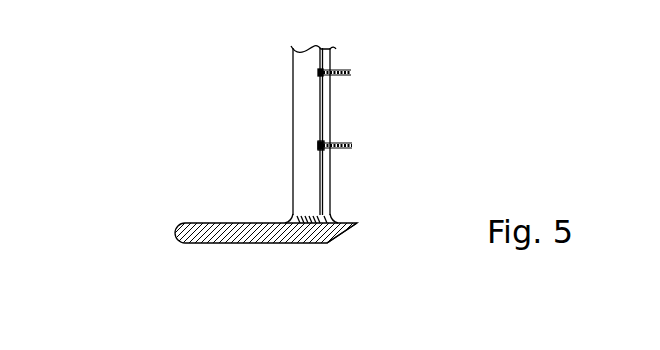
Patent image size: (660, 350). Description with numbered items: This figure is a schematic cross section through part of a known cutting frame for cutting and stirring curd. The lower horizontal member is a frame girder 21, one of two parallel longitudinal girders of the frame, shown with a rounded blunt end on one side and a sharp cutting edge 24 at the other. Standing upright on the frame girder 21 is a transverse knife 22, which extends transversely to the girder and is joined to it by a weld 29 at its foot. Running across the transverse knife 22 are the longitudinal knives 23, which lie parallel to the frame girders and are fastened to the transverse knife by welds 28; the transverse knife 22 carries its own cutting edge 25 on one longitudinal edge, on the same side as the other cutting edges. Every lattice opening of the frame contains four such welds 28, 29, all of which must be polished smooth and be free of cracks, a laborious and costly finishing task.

The frame girder 21 is at (236, 233).
The transverse knife 22 is at (308, 88).
The longitudinal knife 23 is at (343, 70).
The cutting edge 24 is at (342, 235).
The cutting edge 25 is at (351, 73).
The weld 28 is at (321, 143).
The weld 29 is at (293, 222).